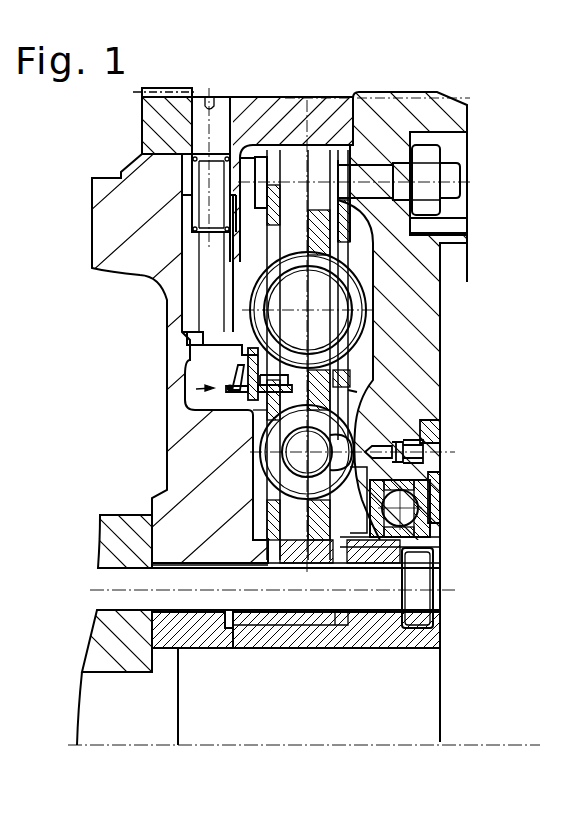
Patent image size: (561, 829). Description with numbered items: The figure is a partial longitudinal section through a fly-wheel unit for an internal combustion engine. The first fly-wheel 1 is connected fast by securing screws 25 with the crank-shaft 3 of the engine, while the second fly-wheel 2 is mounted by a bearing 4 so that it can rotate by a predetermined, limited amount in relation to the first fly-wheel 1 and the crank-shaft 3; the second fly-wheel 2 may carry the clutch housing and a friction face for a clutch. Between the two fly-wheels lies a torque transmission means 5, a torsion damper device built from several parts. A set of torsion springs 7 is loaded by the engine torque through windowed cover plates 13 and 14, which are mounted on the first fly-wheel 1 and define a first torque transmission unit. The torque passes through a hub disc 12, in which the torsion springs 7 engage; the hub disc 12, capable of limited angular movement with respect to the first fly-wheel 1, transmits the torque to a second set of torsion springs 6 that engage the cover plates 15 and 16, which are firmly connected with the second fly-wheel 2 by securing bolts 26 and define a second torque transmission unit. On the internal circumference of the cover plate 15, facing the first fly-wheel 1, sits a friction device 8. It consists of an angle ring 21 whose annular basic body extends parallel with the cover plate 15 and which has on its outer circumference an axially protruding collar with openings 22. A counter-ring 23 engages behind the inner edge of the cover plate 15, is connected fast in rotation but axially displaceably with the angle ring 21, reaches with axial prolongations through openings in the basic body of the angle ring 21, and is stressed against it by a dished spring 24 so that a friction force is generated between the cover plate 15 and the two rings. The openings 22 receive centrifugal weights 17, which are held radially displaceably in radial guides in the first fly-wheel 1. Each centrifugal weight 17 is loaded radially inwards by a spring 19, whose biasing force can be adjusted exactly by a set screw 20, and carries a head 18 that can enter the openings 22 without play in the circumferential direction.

The first fly-wheel 1 is at (107, 190).
The second fly-wheel 2 is at (428, 115).
The crank-shaft 3 is at (112, 638).
The bearing 4 is at (407, 515).
The torque transmission means 5 is at (373, 350).
The second set of torsion springs 6 is at (357, 297).
The torsion springs 7 is at (430, 466).
The friction device 8 is at (222, 388).
The hub disc 12 is at (323, 200).
The cover plate 13 is at (263, 412).
The cover plate 14 is at (363, 402).
The cover plate 15 is at (200, 240).
The cover plate 16 is at (413, 222).
The centrifugal weights 17 is at (193, 275).
The head 18 is at (185, 332).
The spring 19 is at (190, 190).
The set screw 20 is at (217, 107).
The angle ring 21 is at (240, 388).
The openings 22 is at (220, 357).
The counter-ring 23 is at (335, 375).
The dished spring 24 is at (240, 370).
The securing screws 25 is at (425, 603).
The securing bolts 26 is at (372, 173).